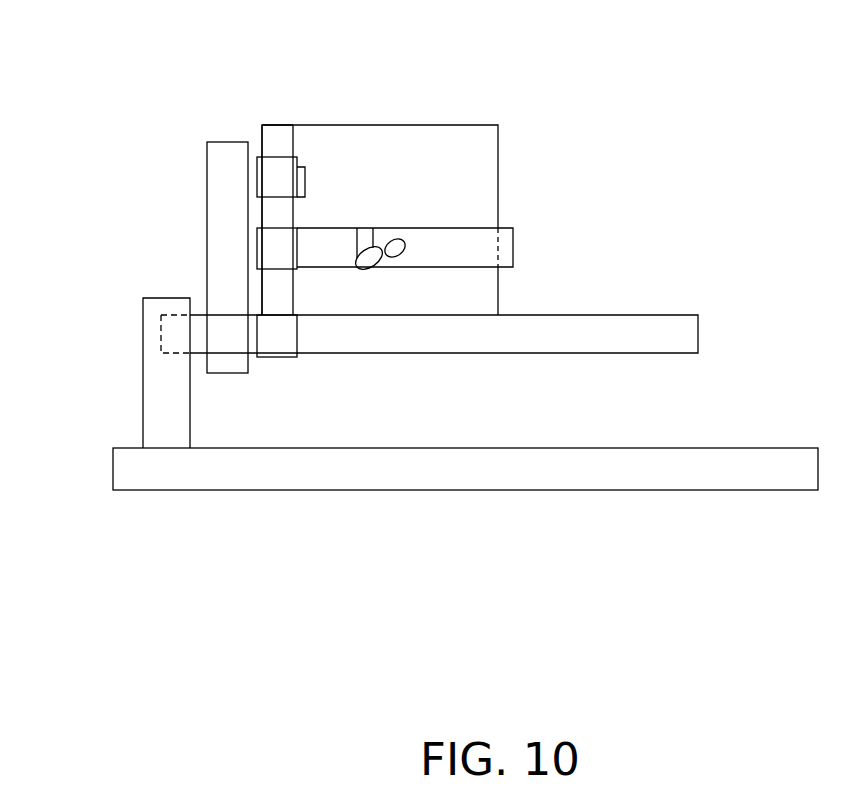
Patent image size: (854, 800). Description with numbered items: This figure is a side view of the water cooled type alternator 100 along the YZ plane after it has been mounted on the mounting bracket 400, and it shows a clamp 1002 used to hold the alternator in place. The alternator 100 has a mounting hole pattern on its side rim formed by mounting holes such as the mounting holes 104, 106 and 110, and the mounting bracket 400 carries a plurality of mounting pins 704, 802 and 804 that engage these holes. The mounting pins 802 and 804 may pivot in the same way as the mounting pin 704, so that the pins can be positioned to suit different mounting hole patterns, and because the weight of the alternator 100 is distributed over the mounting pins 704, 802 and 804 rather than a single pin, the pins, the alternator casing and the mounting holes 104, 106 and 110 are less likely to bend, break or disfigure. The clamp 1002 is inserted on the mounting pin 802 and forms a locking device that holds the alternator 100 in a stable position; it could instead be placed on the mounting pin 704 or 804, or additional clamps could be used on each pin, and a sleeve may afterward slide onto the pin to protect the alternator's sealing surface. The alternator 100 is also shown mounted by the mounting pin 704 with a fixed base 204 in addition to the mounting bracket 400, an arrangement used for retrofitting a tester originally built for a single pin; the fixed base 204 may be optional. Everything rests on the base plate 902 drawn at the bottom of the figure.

The water cooled type alternator 100 is at (463, 158).
The mounting hole 104 is at (278, 243).
The mounting hole 106 is at (278, 337).
The mounting hole 110 is at (283, 172).
The fixed base 204 is at (165, 363).
The mounting bracket 400 is at (233, 188).
The mounting pin 704 is at (672, 332).
The mounting pin 802 is at (507, 262).
The mounting pin 804 is at (300, 163).
The base 902 is at (690, 447).
The clamp 1002 is at (392, 238).